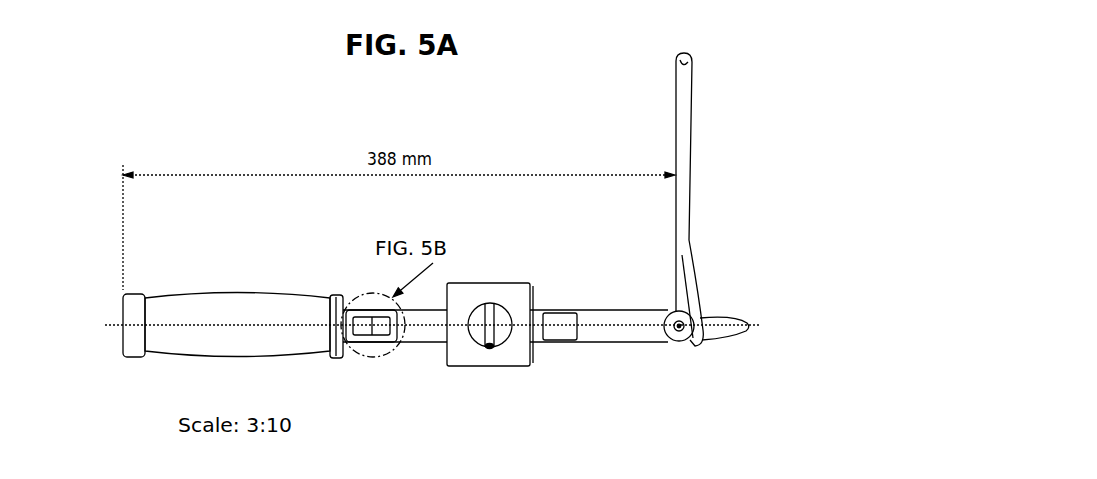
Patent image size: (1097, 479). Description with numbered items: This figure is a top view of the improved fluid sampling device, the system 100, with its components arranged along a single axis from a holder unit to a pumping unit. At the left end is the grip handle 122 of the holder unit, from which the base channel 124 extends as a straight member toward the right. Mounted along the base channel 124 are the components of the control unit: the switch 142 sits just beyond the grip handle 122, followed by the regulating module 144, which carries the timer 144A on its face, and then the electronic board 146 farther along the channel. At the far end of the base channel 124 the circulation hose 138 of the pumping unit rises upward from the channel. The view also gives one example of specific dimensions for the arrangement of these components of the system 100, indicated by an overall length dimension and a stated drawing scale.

The system 100 is at (840, 63).
The grip handle 122 is at (197, 343).
The base channel 124 is at (620, 330).
The circulation hose 138 is at (683, 188).
The switch 142 is at (378, 332).
The regulating module 144 is at (507, 352).
The timer 144A is at (487, 348).
The electronic board 146 is at (555, 328).